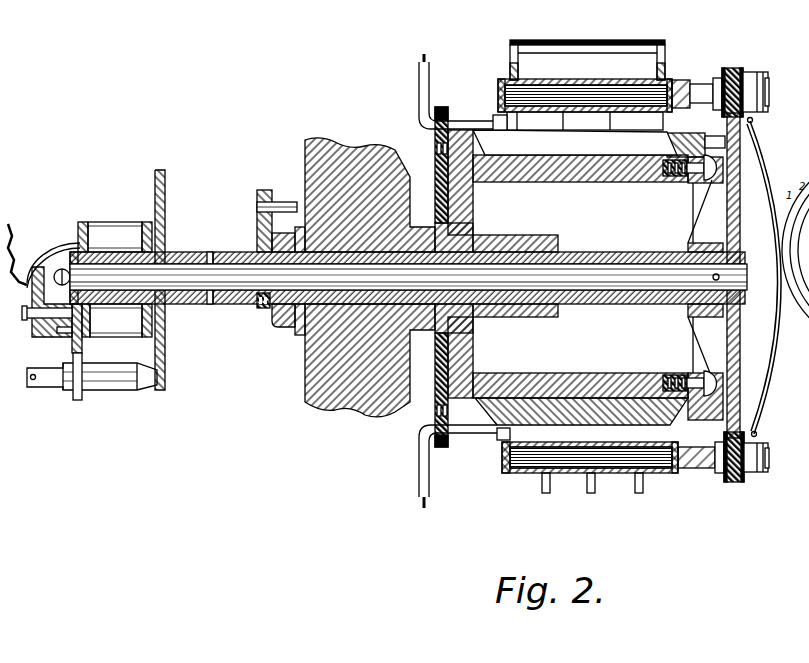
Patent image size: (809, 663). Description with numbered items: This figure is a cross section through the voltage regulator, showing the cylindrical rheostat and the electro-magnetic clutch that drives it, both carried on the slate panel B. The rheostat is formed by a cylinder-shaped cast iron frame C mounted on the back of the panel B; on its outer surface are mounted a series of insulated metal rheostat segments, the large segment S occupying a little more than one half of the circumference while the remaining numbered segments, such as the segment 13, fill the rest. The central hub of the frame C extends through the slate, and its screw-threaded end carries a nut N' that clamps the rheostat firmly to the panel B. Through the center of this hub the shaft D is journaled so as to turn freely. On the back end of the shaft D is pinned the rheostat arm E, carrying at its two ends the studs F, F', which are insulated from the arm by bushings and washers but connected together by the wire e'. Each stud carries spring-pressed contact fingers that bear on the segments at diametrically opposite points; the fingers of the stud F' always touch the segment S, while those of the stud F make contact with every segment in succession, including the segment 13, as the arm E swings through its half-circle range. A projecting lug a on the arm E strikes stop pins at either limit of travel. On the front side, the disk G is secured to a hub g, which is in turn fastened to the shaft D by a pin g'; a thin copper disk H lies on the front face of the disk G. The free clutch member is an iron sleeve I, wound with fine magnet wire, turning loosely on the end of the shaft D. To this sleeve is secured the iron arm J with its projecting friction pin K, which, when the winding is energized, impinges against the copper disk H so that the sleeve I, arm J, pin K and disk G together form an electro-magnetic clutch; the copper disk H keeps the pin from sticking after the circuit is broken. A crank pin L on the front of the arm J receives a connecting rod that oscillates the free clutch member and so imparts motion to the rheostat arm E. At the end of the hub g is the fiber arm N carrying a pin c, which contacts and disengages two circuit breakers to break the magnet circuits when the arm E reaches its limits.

The slate panel B is at (349, 151).
The cast iron frame C is at (546, 182).
The shaft D is at (615, 278).
The rheostat arm E is at (738, 230).
The stud F is at (729, 84).
The stud F' is at (727, 478).
The disk G is at (165, 196).
The copper disk H is at (155, 181).
The iron sleeve I is at (105, 252).
The arm J is at (78, 402).
The friction pin K is at (128, 391).
The crank pin L is at (45, 388).
The fiber arm N is at (262, 221).
The nut N' is at (281, 326).
The rheostat segment S is at (581, 411).
The projecting lug a is at (713, 139).
The pin c is at (273, 201).
The wire e' is at (776, 277).
The hub g is at (200, 299).
The pin g' is at (226, 300).
The pole piece 13 is at (612, 150).